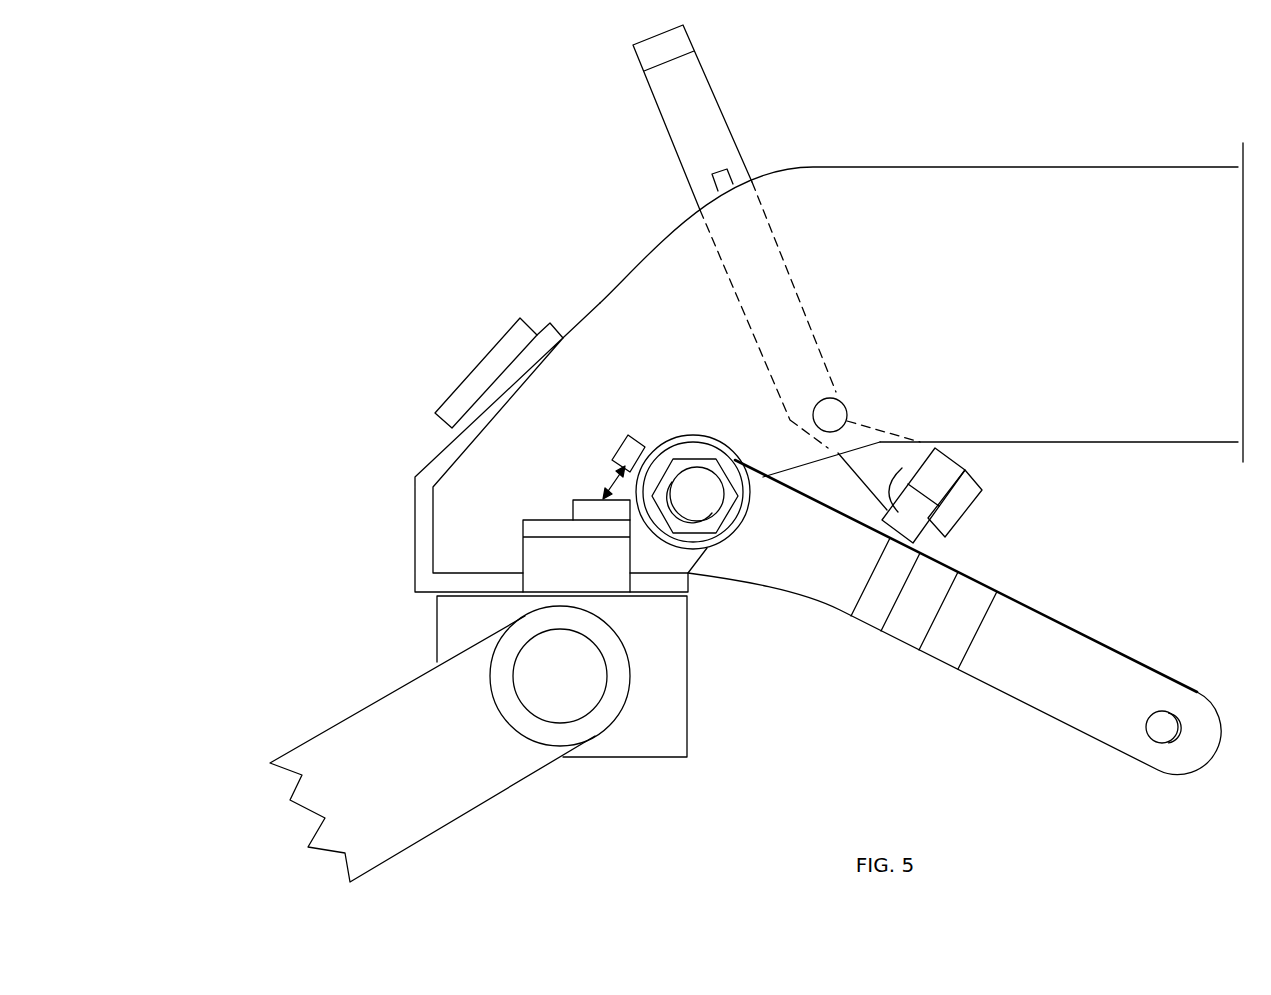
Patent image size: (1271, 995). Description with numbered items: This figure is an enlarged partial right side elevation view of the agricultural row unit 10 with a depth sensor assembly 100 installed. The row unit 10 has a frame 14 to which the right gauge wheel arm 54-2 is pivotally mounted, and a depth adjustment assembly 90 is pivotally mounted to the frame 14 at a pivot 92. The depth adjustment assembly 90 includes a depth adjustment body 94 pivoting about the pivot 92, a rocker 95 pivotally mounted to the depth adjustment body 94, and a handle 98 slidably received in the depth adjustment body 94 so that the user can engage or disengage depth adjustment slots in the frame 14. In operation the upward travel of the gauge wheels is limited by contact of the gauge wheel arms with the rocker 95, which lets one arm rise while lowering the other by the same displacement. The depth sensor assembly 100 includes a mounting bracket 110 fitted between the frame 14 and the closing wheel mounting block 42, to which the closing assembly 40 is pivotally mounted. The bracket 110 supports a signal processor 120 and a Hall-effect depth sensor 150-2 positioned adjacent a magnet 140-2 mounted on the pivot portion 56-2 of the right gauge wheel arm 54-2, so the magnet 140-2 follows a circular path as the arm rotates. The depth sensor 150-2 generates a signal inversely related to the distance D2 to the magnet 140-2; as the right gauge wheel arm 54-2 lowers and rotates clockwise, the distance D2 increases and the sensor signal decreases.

The row unit 10 is at (437, 181).
The frame 14 is at (945, 167).
The closing assembly 40 is at (305, 710).
The closing wheel mounting block 42 is at (593, 760).
The right gauge wheel arm 54-2 is at (1013, 657).
The pivot portion 56-2 is at (735, 533).
The depth adjustment assembly 90 is at (972, 518).
The pivot 92 is at (830, 415).
The depth adjustment body 94 is at (802, 302).
The rocker 95 is at (957, 455).
The handle 98 is at (731, 132).
The depth sensor assembly 100 is at (305, 409).
The mounting bracket 110 is at (415, 563).
The signal processor 120 is at (473, 362).
The magnet 140-2 is at (648, 436).
The depth sensor 150-2 is at (573, 513).
The distance D2 is at (612, 493).